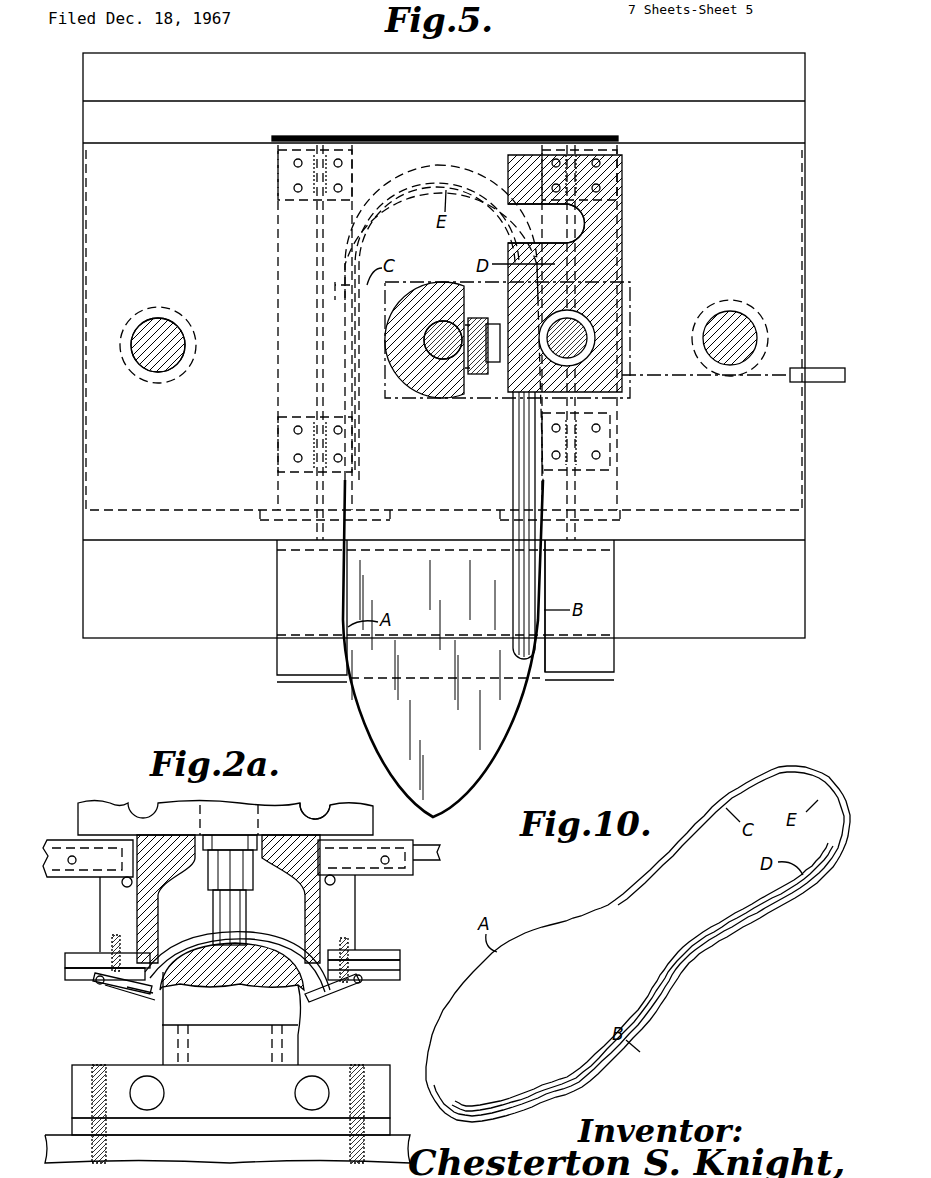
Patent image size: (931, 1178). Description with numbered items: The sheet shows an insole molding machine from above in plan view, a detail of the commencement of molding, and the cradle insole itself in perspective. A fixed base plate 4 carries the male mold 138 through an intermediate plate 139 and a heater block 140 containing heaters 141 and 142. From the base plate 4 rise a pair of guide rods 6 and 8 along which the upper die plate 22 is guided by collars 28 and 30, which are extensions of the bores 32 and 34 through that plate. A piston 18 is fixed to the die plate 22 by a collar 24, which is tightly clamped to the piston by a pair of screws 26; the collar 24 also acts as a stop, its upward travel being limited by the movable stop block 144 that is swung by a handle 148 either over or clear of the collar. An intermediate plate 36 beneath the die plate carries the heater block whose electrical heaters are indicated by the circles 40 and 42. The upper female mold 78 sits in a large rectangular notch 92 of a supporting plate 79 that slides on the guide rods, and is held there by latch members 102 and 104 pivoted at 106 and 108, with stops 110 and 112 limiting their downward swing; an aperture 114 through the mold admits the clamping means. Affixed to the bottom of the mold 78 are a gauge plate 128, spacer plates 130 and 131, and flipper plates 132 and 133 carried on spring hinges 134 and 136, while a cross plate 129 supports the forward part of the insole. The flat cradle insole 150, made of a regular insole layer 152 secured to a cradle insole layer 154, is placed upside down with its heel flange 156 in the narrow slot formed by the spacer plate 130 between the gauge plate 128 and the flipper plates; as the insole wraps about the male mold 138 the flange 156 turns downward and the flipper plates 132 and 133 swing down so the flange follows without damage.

In FIG. 5, the fixed base plate 4 is at (229, 628).
In FIG. 2A, the fixed base plate 4 is at (58, 1142).
In FIG. 5, the guide rod 6 is at (140, 325).
In FIG. 5, the guide rod 8 is at (752, 322).
In FIG. 5, the piston 18 is at (441, 352).
In FIG. 5, the upper die plate 22 is at (186, 225).
In FIG. 5, the collar 24 is at (430, 300).
In FIG. 5, the screws 26 is at (480, 375).
In FIG. 5, the collar 28 is at (170, 305).
In FIG. 5, the collar 30 is at (736, 298).
In FIG. 5, the bore 32 is at (188, 325).
In FIG. 5, the bore 34 is at (706, 330).
In FIG. 5, the intermediate plate 36 is at (600, 140).
In FIG. 2A, the electrical heater 40 is at (143, 812).
In FIG. 2A, the electrical heater 42 is at (315, 808).
In FIG. 5, the upper female mold 78 is at (438, 540).
In FIG. 2A, the upper female mold 78 is at (350, 908).
In FIG. 5, the supporting plate 79 is at (97, 125).
In FIG. 2A, the supporting plate 79 is at (47, 842).
In FIG. 5, the rectangular notch 92 is at (308, 137).
In FIG. 5, the latch member 102 is at (330, 517).
In FIG. 2A, the latch member 102 is at (115, 845).
In FIG. 5, the latch member 104 is at (555, 520).
In FIG. 2A, the latch member 104 is at (340, 848).
In FIG. 2A, the pivot 106 is at (72, 864).
In FIG. 2A, the pivot 108 is at (386, 857).
In FIG. 2A, the stop 110 is at (122, 884).
In FIG. 2A, the stop 112 is at (336, 882).
In FIG. 2A, the aperture 114 is at (203, 880).
In FIG. 5, the gauge plate 128 is at (350, 270).
In FIG. 2A, the gauge plate 128 is at (70, 960).
In FIG. 5, the cross plate 129 is at (543, 672).
In FIG. 2A, the spacer plate 130 is at (58, 972).
In FIG. 2A, the spacer plate 131 is at (400, 964).
In FIG. 5, the flipper plate 132 is at (405, 167).
In FIG. 2A, the flipper plate 132 is at (127, 990).
In FIG. 5, the flipper plate 133 is at (505, 160).
In FIG. 2A, the flipper plate 133 is at (318, 990).
In FIG. 5, the hinge 134 is at (280, 177).
In FIG. 2A, the hinge 134 is at (97, 983).
In FIG. 5, the hinge 136 is at (622, 165).
In FIG. 2A, the hinge 136 is at (362, 982).
In FIG. 2A, the male mold 138 is at (245, 1016).
In FIG. 2A, the intermediate plate 139 is at (244, 1128).
In FIG. 2A, the heater block 140 is at (253, 1100).
In FIG. 2A, the heater 141 is at (156, 1095).
In FIG. 2A, the heater 142 is at (302, 1098).
In FIG. 5, the stop block 144 is at (622, 245).
In FIG. 5, the handle 148 is at (762, 382).
In FIG. 5, the cradle insole 150 is at (360, 728).
In FIG. 10, the cradle insole 150 is at (573, 999).
In FIG. 2A, the regular insole layer 152 is at (190, 955).
In FIG. 10, the regular insole layer 152 is at (570, 1087).
In FIG. 2A, the cradle insole layer 154 is at (265, 958).
In FIG. 10, the cradle insole layer 154 is at (606, 1068).
In FIG. 5, the flange 156 is at (450, 185).
In FIG. 2A, the flange 156 is at (150, 996).
In FIG. 10, the flange 156 is at (776, 902).